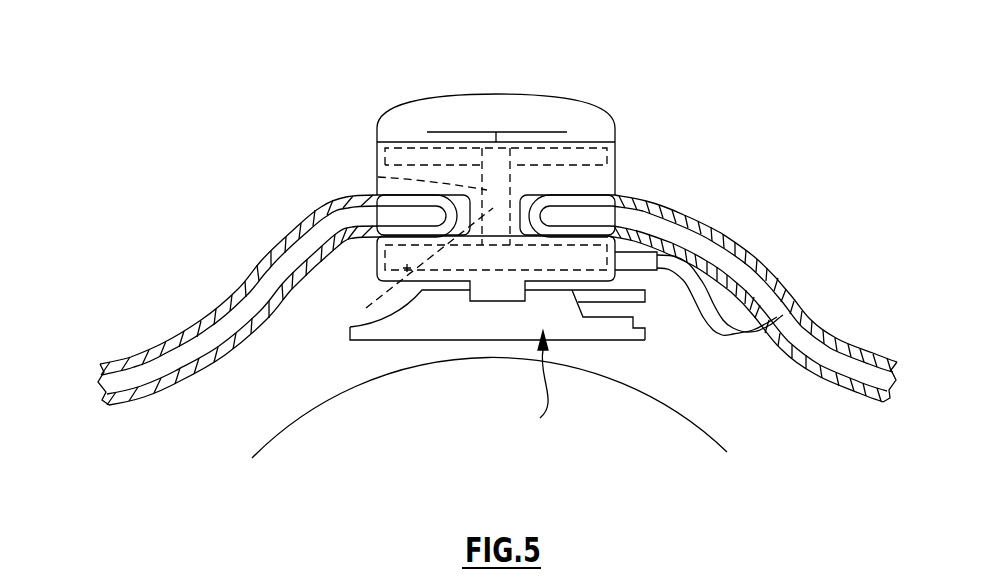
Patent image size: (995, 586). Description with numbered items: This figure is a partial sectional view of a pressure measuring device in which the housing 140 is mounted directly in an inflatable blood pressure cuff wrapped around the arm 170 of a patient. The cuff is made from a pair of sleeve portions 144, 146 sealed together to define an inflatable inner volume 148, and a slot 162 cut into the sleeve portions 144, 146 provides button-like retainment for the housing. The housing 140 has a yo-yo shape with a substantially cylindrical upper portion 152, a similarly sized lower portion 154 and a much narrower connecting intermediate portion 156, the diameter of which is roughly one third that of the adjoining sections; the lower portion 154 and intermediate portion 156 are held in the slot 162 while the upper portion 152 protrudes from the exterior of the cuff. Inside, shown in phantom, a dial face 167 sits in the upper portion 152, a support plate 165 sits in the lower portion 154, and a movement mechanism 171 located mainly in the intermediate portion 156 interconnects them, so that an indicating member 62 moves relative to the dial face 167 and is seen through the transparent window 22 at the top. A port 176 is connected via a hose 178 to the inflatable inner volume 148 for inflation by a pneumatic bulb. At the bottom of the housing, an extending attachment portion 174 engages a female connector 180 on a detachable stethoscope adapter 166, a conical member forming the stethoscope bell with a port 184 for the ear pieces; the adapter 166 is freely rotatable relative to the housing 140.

The housing 140 is at (248, 74).
The transparent window 22 is at (398, 120).
The indicating member 62 is at (543, 132).
The upper portion 152 is at (377, 165).
The dial face 167 is at (598, 154).
The movement mechanism 171 is at (377, 178).
The slot 162 is at (532, 199).
The inflatable inner volume 148 is at (228, 291).
The sleeve portion 146 is at (797, 317).
The sleeve portion 144 is at (817, 363).
The intermediate portion 156 is at (377, 263).
The lower portion 154 is at (377, 278).
The support plate 165 is at (405, 265).
The female connector 180 is at (468, 303).
The attachment portion 174 is at (495, 302).
The stethoscope adapter 166 is at (521, 383).
The port 184 is at (630, 303).
The port 176 is at (643, 265).
The hose 178 is at (728, 337).
The arm 170 is at (307, 452).